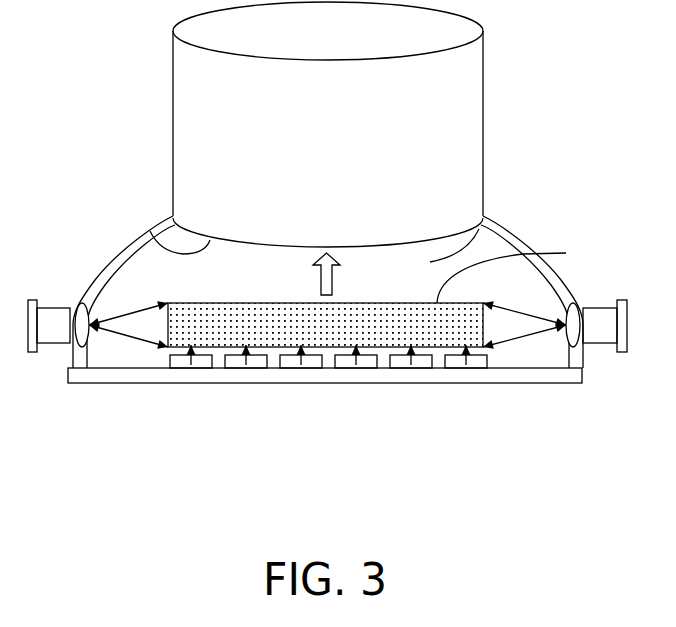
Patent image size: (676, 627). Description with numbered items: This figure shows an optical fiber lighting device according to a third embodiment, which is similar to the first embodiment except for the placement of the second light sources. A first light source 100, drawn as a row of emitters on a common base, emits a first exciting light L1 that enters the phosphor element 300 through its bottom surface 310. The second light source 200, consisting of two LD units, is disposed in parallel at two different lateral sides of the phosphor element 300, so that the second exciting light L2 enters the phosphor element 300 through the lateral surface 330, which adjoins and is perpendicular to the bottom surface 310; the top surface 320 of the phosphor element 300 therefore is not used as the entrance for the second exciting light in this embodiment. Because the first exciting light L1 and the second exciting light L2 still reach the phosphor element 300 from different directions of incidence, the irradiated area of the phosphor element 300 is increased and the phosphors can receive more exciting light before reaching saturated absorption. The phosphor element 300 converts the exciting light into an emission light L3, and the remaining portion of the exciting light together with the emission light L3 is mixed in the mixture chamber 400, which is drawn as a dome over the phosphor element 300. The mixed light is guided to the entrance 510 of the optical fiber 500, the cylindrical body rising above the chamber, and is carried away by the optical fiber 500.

The first light source 100 is at (180, 365).
The second light source 200 is at (603, 333).
The phosphor element 300 is at (320, 337).
The bottom surface 310 is at (432, 343).
The top surface 320 is at (525, 270).
The lateral surface 330 is at (483, 325).
The mixture chamber 400 is at (487, 233).
The optical fiber 500 is at (462, 118).
The entrance 510 is at (152, 239).
The first exciting light L1 is at (360, 342).
The second exciting light L2 is at (125, 338).
The emission light L3 is at (341, 274).